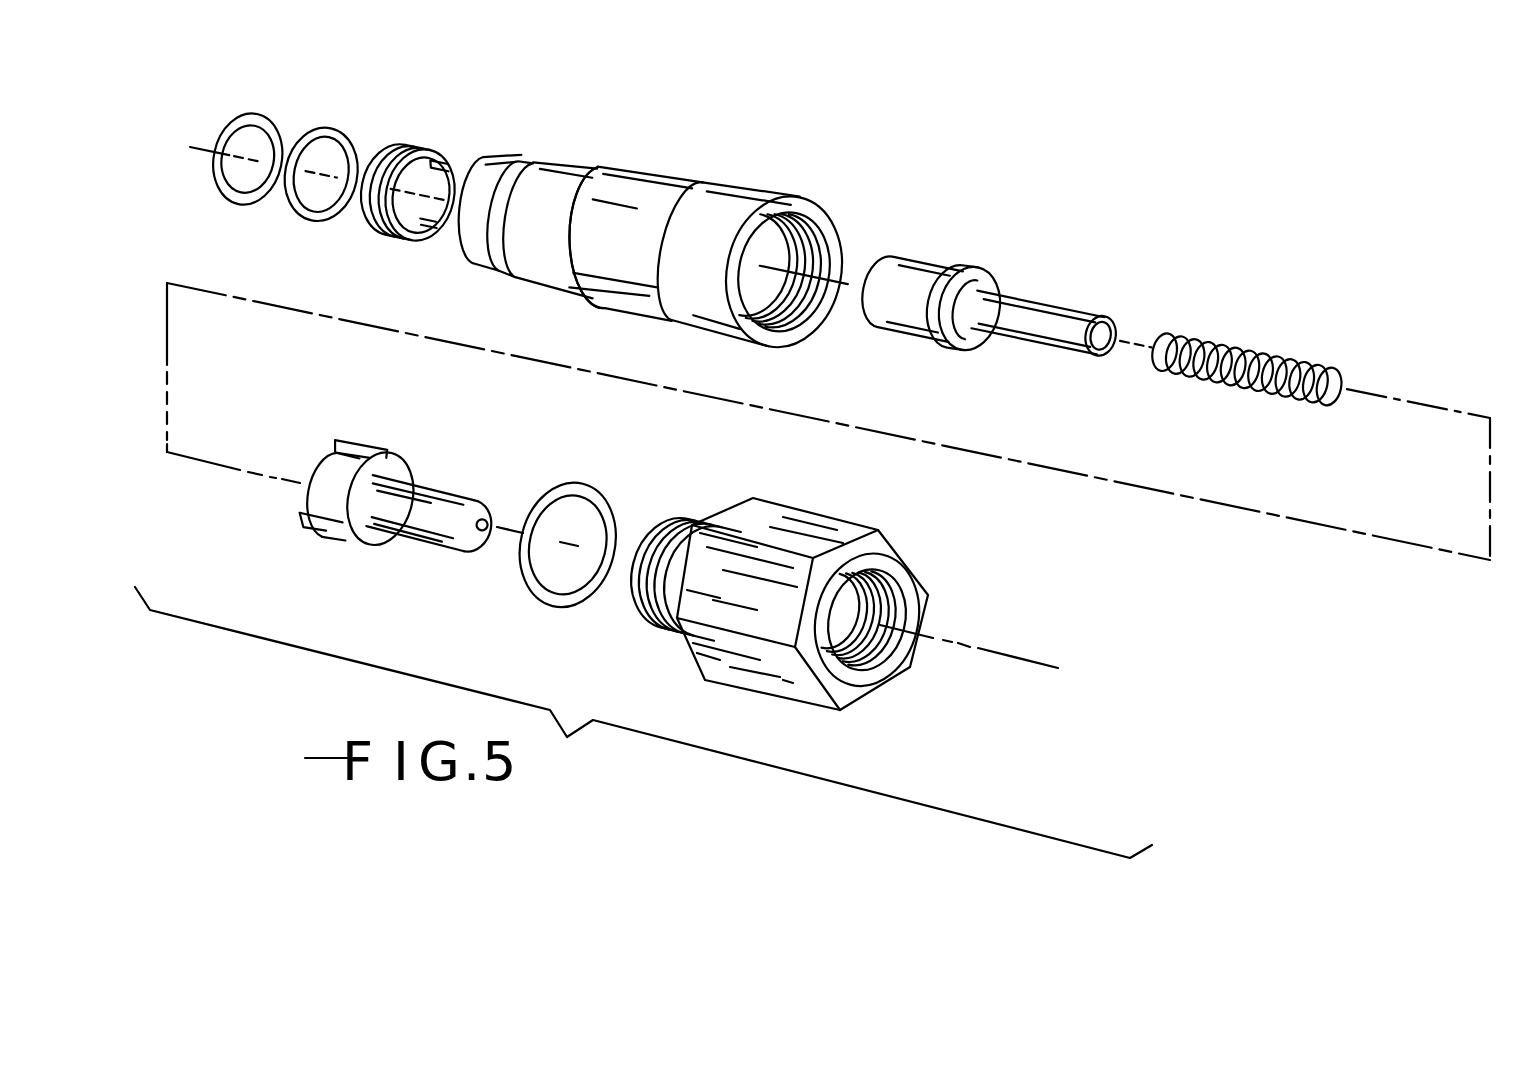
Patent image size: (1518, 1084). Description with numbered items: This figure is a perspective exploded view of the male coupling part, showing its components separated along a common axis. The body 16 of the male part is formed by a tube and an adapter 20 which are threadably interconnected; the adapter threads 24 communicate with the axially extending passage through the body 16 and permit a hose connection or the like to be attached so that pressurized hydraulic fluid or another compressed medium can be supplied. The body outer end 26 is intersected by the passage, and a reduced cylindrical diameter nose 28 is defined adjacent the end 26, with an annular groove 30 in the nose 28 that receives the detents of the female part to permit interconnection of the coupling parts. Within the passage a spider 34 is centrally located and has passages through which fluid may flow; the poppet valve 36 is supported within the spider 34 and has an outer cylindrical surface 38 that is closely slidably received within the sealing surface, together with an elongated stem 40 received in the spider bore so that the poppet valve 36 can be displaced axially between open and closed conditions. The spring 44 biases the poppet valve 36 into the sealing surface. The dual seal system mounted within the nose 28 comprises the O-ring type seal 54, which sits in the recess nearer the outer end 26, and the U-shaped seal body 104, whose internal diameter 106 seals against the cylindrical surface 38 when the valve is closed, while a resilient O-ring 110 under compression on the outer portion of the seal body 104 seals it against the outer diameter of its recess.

The body 16 is at (624, 292).
The adapter 20 is at (800, 508).
The adapter threads 24 is at (878, 648).
The body outer end 26 is at (488, 150).
The nose 28 is at (594, 170).
The annular groove 30 is at (540, 162).
The spider 34 is at (455, 487).
The poppet valve 36 is at (893, 312).
The outer cylindrical surface 38 is at (922, 262).
The elongated stem 40 is at (1053, 302).
The spring 44 is at (1250, 348).
The O-ring type seal 54 is at (245, 210).
The seal body 104 is at (395, 242).
The internal diameter 106 is at (417, 152).
The resilient O-ring 110 is at (322, 225).